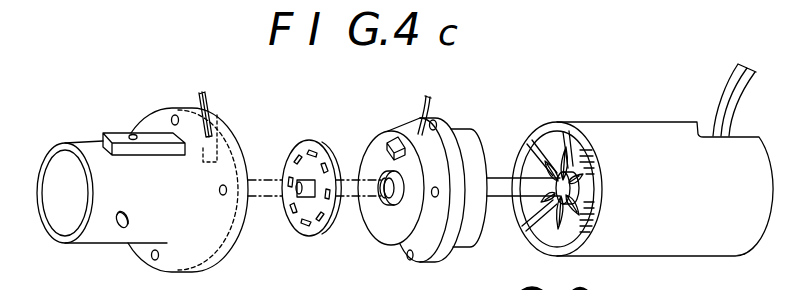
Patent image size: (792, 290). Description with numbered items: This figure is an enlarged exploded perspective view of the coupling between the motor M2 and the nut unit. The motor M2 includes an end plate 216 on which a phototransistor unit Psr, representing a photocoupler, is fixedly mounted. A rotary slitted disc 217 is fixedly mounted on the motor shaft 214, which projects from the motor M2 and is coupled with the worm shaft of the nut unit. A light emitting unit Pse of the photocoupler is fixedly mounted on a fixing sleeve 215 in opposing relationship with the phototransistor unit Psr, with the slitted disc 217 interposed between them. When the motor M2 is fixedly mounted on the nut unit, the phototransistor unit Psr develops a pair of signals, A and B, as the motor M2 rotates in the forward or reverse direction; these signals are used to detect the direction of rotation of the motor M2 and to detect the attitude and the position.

The fixing sleeve 215 is at (86, 144).
The light emitting unit Pse is at (213, 142).
The rotary slitted disc 217 is at (312, 139).
The end plate 216 is at (398, 130).
The phototransistor unit Psr is at (381, 143).
The motor shaft 214 is at (503, 197).
The motor M2 is at (598, 133).